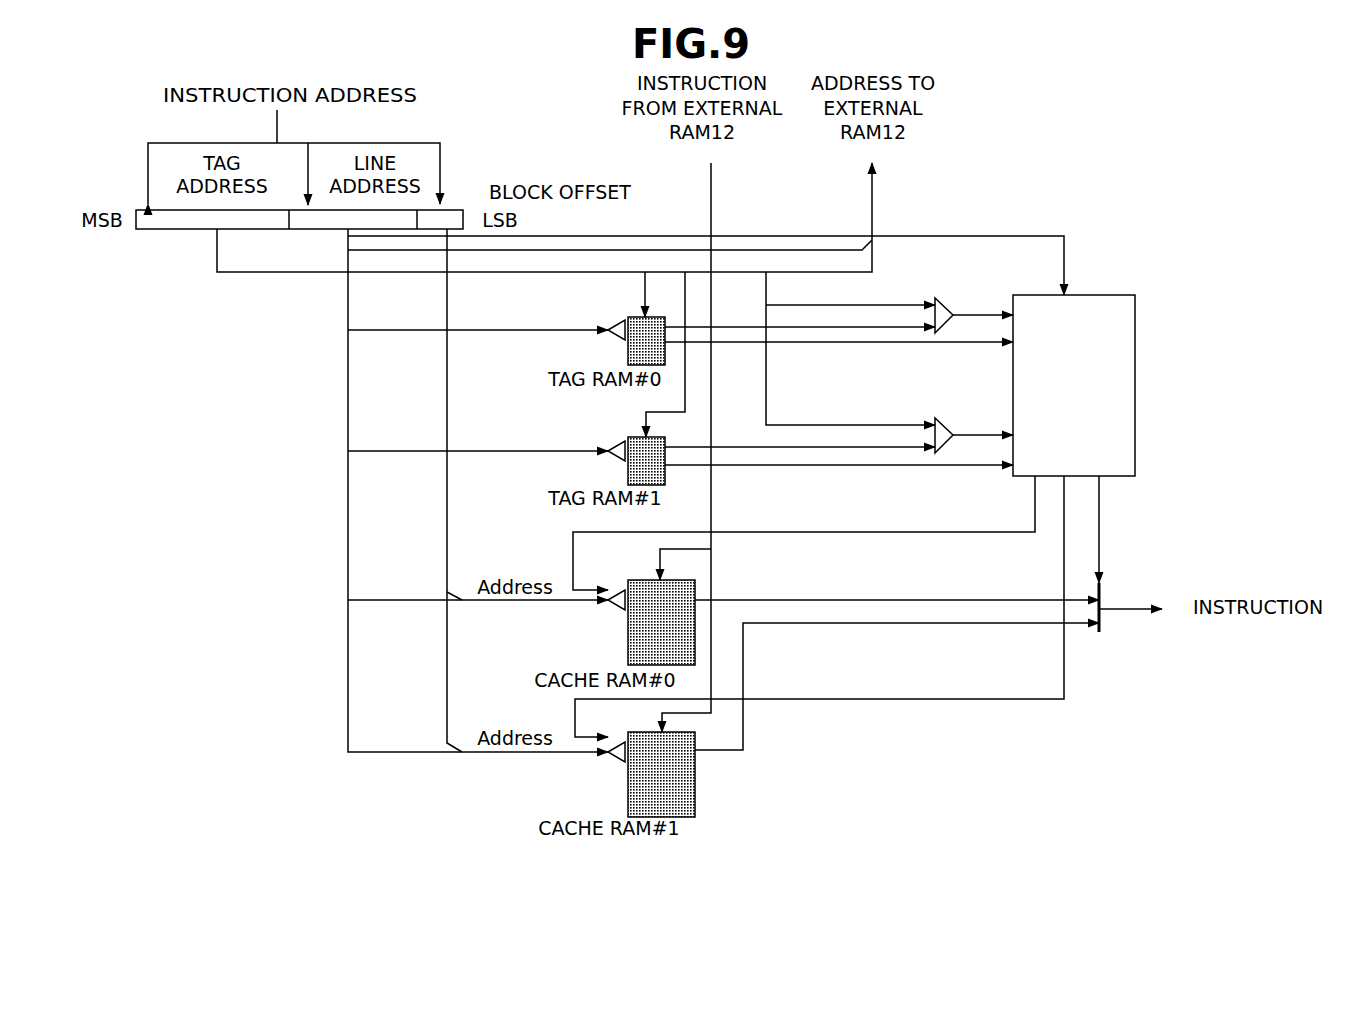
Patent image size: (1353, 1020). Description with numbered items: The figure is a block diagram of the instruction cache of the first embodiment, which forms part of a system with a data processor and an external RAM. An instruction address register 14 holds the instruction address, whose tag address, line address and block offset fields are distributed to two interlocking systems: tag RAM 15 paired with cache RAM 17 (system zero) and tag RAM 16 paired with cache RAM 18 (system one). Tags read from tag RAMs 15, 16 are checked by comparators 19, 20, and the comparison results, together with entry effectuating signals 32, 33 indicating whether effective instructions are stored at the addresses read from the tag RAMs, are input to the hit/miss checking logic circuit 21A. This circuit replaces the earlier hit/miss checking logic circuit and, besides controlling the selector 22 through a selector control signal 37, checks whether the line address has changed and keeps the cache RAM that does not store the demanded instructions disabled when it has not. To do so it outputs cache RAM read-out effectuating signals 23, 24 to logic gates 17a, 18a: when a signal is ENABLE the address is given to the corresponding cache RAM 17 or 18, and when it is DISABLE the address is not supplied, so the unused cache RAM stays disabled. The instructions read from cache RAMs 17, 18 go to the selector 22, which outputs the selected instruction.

The instruction address register 14 is at (157, 233).
The tag RAM 15 is at (628, 350).
The tag RAM 16 is at (628, 476).
The cache RAM 17 is at (628, 655).
The logic gate 17a is at (616, 608).
The cache RAM 18 is at (628, 804).
The logic gate 18a is at (616, 759).
The comparator 19 is at (937, 297).
The comparator 20 is at (937, 417).
The hit/miss checking logic circuit 21A is at (1136, 358).
The selector 22 is at (1066, 660).
The cache RAM read-out effectuating signal 23 is at (938, 535).
The cache RAM read-out effectuating signal 24 is at (938, 702).
The entry effectuating signal 32 is at (872, 345).
The entry effectuating signal 33 is at (872, 468).
The selector control signal 37 is at (1101, 522).